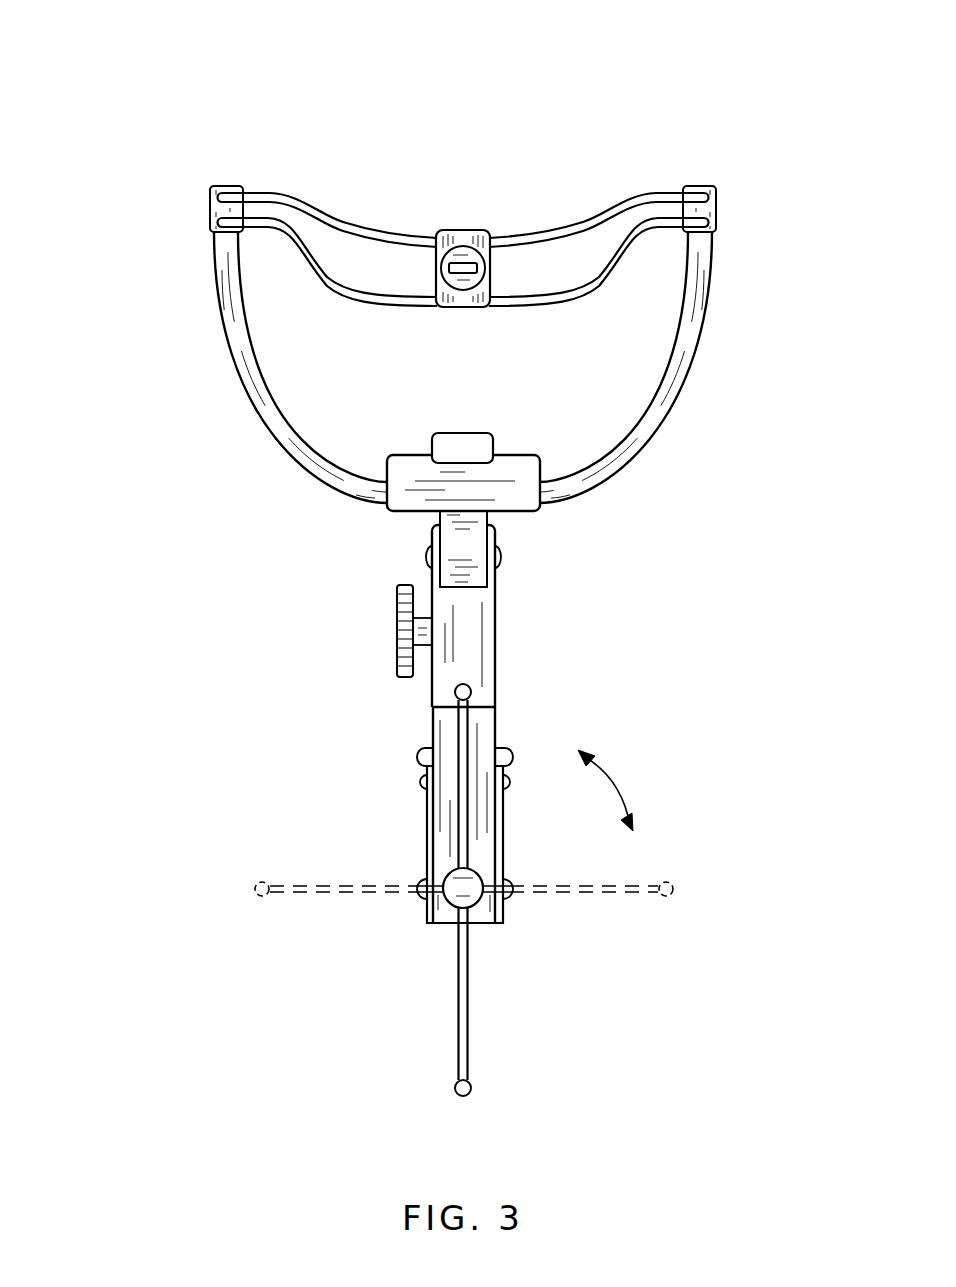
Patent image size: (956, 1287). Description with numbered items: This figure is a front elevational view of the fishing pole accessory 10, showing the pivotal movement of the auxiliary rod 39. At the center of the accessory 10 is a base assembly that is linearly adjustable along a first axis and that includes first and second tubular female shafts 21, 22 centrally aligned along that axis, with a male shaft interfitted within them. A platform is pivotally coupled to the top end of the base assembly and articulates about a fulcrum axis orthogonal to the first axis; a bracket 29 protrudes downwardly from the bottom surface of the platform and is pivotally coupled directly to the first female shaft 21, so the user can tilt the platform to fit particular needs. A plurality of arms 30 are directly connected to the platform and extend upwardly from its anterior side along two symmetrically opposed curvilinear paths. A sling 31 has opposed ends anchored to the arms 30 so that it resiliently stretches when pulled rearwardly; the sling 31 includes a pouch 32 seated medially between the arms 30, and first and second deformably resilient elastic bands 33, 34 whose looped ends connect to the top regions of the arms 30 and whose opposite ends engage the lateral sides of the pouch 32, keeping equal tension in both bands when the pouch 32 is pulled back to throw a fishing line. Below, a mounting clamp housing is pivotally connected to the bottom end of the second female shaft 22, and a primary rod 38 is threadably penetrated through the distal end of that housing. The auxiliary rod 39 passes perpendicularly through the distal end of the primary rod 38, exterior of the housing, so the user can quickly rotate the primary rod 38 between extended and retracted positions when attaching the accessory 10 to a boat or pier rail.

The fishing pole accessory 10 is at (150, 125).
The first tubular female shaft 21 is at (537, 616).
The second tubular female shaft 22 is at (466, 804).
The bracket 29 is at (470, 537).
The arms 30 is at (695, 320).
The sling 31 is at (428, 210).
The pouch 32 is at (507, 203).
The first elastic band 33 is at (323, 155).
The second elastic band 34 is at (602, 140).
The primary rod 38 is at (453, 895).
The auxiliary rod 39 is at (466, 1005).